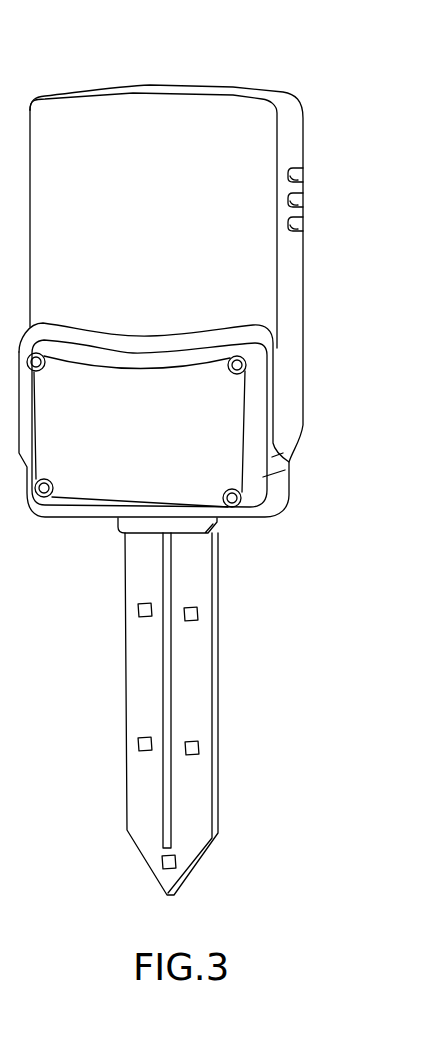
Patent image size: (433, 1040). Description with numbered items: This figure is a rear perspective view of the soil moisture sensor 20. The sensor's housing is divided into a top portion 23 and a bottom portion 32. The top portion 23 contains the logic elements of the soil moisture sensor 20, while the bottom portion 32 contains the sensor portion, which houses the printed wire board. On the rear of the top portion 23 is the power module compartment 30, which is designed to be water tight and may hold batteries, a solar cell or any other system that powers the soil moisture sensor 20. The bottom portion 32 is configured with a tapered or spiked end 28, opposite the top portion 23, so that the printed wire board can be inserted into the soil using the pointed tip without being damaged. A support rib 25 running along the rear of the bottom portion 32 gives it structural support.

The soil moisture sensor 20 is at (160, 62).
The top portion 23 is at (313, 518).
The support rib 25 is at (168, 703).
The tapered or spiked end 28 is at (135, 795).
The power module compartment 30 is at (200, 463).
The bottom portion 32 is at (317, 895).